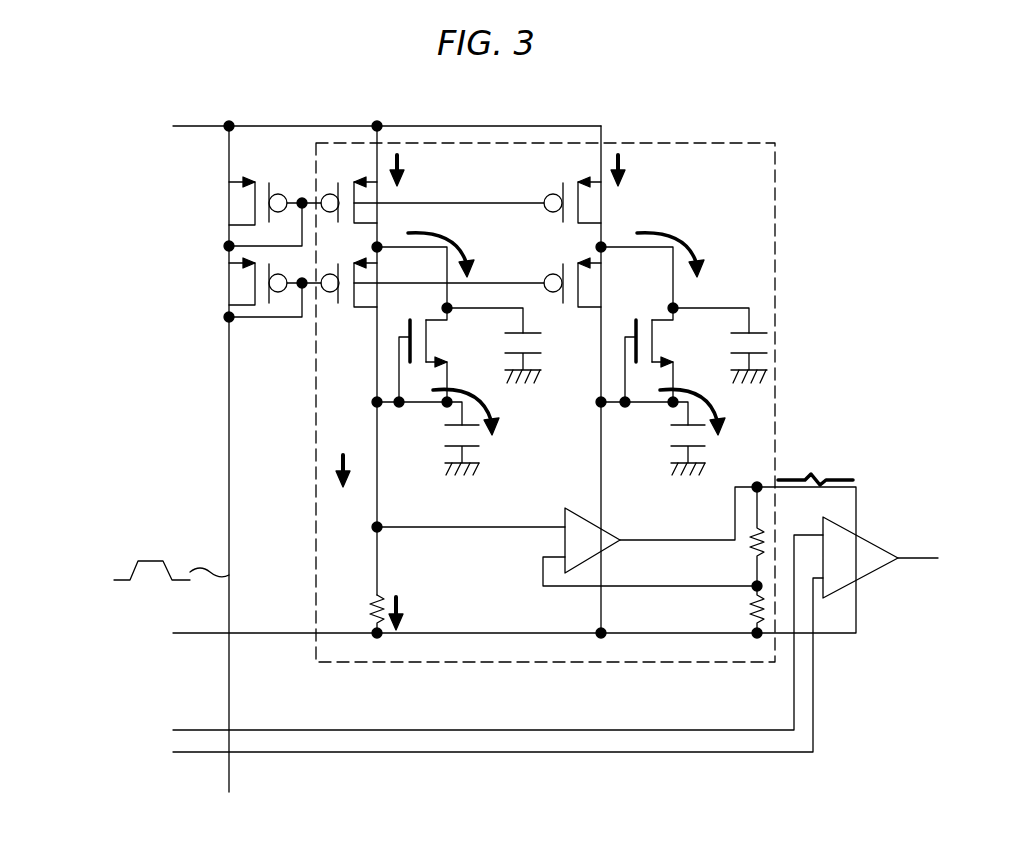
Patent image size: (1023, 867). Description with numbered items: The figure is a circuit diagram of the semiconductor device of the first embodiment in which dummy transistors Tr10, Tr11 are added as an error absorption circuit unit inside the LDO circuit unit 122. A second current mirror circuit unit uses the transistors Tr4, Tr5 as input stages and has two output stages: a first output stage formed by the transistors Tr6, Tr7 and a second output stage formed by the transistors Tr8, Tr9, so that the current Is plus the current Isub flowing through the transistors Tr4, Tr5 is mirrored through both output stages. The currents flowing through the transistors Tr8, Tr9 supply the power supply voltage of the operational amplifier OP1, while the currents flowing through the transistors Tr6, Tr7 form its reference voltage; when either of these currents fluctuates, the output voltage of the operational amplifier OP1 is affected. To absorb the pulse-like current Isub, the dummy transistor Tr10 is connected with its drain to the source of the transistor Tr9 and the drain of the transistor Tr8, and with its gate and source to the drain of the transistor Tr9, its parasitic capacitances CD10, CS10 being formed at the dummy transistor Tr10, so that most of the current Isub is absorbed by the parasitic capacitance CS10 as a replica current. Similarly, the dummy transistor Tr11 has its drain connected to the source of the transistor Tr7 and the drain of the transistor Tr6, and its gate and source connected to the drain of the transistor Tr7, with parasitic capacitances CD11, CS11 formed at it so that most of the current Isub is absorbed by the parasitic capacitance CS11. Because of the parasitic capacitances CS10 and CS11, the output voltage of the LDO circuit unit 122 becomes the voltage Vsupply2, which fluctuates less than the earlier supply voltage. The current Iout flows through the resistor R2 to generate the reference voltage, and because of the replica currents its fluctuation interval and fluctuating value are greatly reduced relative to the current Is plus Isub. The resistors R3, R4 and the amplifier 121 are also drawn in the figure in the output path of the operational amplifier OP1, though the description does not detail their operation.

The transistor Tr4 is at (228, 203).
The transistor Tr5 is at (228, 284).
The transistor Tr6 is at (375, 218).
The transistor Tr7 is at (343, 300).
The transistor Tr8 is at (598, 214).
The transistor Tr9 is at (629, 293).
The dummy transistor Tr10 is at (703, 350).
The dummy transistor Tr11 is at (474, 350).
The parasitic capacitance CD11 is at (583, 343).
The parasitic capacitance CD10 is at (773, 345).
The parasitic capacitance CS11 is at (446, 432).
The parasitic capacitance CS10 is at (674, 432).
The resistor R2 is at (380, 597).
The resistor R3 is at (752, 555).
The resistor R4 is at (752, 603).
The operational amplifier OP1 is at (612, 530).
The amplifier 121 is at (873, 546).
The LDO circuit unit 122 is at (776, 157).
The voltage Vsupply2 is at (838, 476).
The current Iout is at (343, 457).
The current Is is at (408, 613).